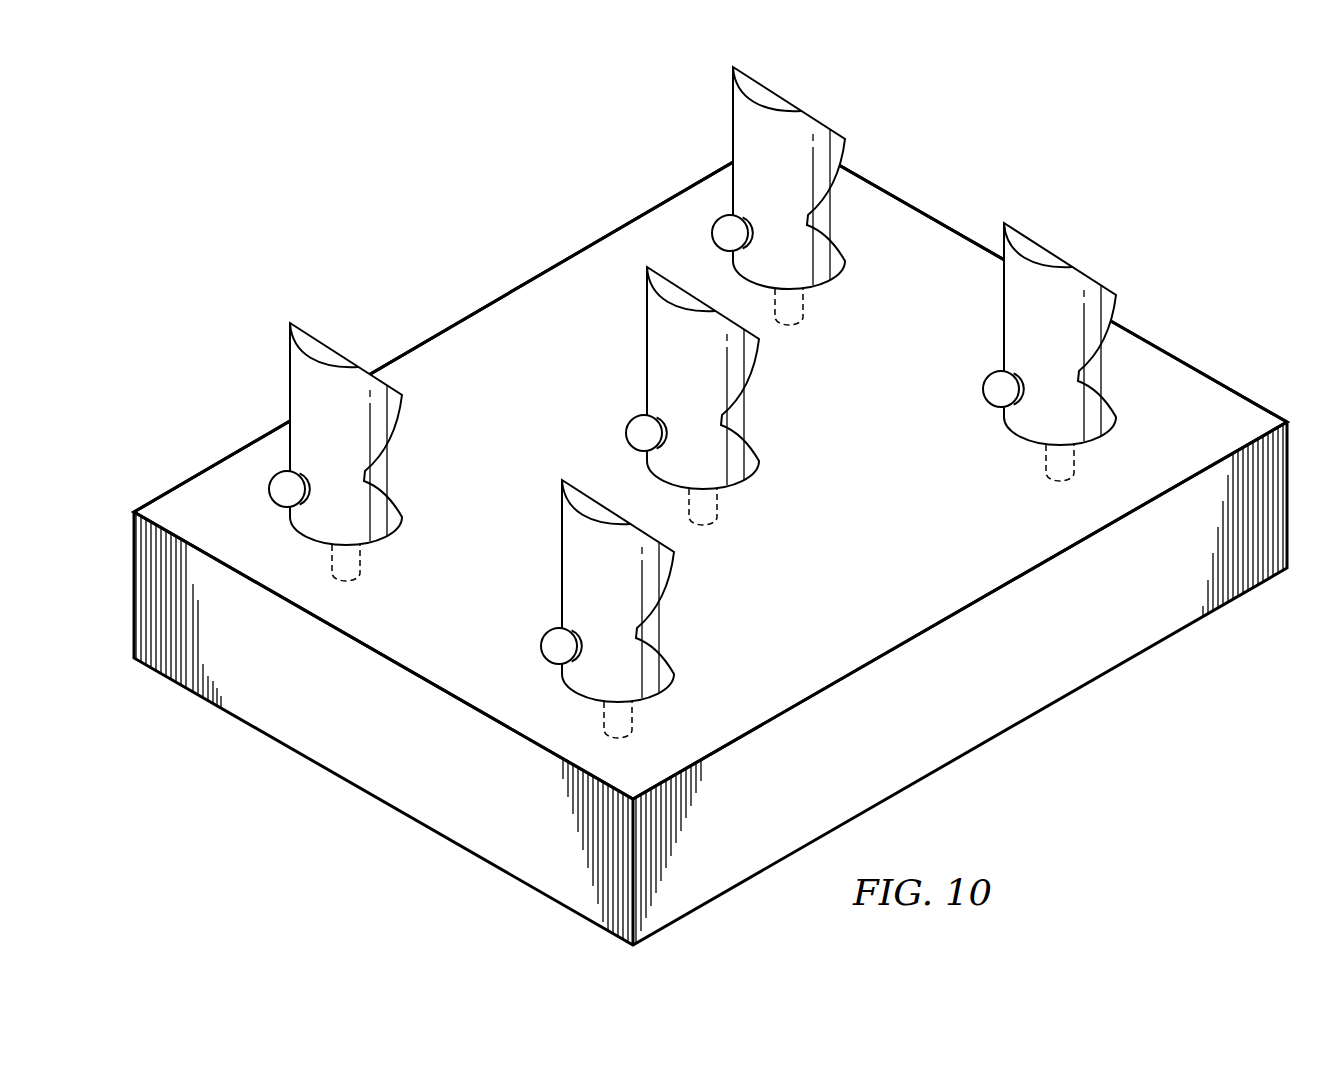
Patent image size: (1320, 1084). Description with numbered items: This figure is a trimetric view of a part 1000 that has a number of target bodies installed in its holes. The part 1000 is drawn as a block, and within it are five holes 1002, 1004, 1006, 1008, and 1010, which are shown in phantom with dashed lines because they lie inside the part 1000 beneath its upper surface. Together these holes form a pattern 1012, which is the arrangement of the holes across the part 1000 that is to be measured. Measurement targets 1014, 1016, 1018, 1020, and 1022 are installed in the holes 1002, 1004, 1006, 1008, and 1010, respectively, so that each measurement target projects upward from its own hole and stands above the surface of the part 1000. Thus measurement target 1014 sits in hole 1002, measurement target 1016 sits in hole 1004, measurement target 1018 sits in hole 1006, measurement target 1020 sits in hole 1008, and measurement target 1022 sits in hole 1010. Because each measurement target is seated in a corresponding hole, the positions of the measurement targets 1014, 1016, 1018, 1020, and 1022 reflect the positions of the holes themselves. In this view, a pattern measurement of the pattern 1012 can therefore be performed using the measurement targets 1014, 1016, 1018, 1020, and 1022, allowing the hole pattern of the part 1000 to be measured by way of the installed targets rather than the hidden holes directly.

The part 1000 is at (1212, 408).
The pattern 1012 is at (1159, 186).
The measurement target 1014 is at (290, 384).
The measurement target 1016 is at (733, 127).
The measurement target 1018 is at (1004, 309).
The measurement target 1020 is at (562, 540).
The measurement target 1022 is at (647, 327).
The hole 1002 is at (360, 560).
The hole 1004 is at (803, 304).
The hole 1006 is at (1046, 460).
The hole 1008 is at (627, 722).
The hole 1010 is at (717, 504).